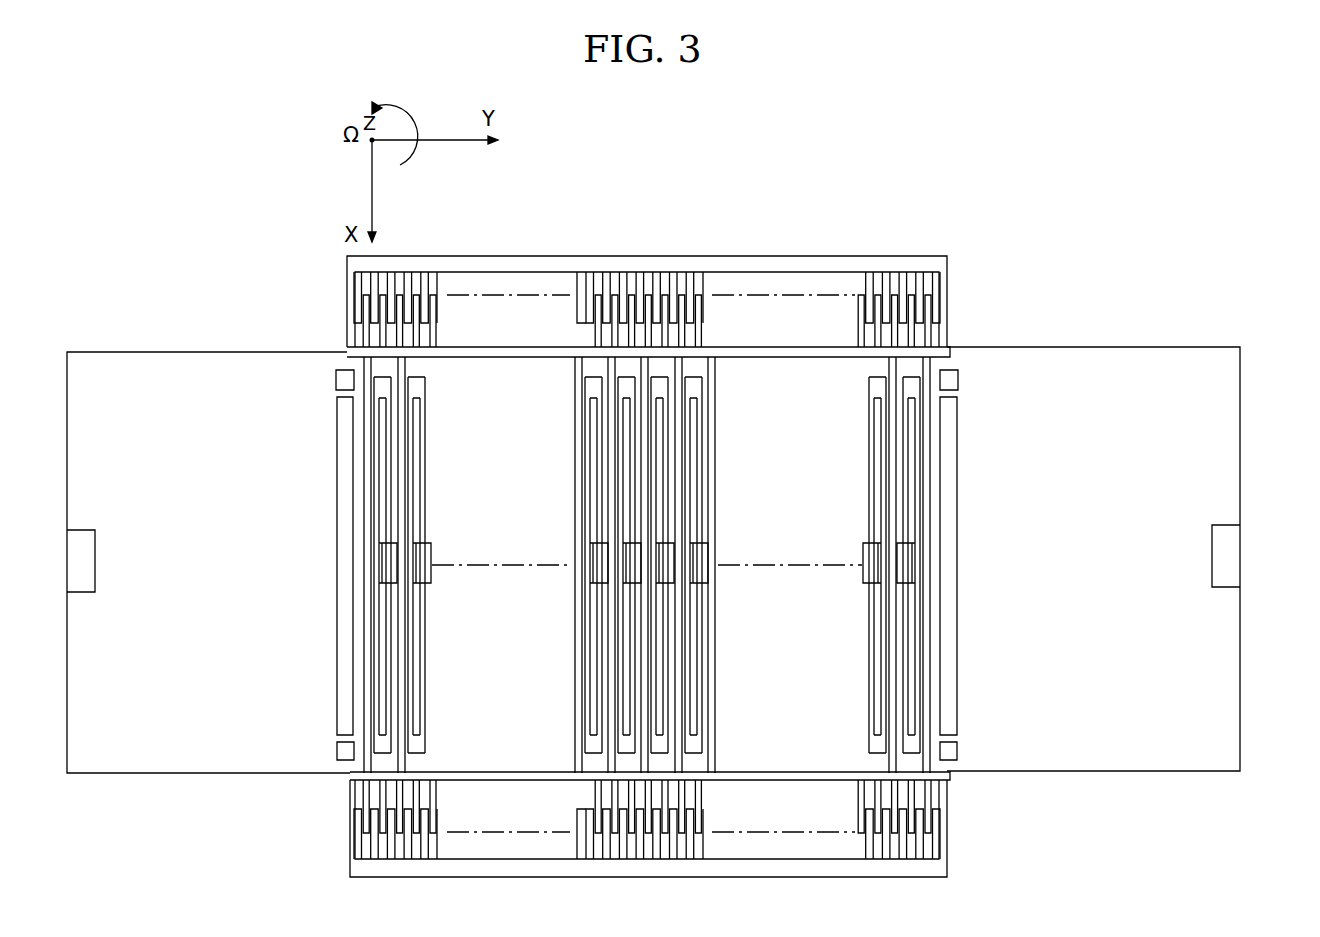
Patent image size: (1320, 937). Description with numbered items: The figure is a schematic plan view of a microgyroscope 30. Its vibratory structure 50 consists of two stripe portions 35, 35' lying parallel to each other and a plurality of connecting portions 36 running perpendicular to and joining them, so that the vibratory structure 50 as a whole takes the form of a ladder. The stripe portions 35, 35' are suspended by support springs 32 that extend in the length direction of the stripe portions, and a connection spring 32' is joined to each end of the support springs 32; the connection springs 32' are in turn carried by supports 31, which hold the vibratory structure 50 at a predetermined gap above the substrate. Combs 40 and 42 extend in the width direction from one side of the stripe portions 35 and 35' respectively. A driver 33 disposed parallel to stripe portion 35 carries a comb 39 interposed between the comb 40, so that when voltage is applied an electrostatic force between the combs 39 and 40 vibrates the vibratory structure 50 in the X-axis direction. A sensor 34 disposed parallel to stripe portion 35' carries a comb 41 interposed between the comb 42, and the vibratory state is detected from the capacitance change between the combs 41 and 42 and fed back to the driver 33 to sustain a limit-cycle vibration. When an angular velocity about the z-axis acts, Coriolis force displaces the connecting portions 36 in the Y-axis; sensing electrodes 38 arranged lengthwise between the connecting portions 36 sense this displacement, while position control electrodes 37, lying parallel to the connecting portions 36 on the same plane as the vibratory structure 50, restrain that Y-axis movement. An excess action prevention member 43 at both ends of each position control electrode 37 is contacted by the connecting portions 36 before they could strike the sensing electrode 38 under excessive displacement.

The microgyroscope 30 is at (1108, 252).
The support 31 is at (97, 561).
The support spring 32 is at (714, 521).
The connection spring 32' is at (208, 562).
The driver 33 is at (345, 260).
The sensor 34 is at (690, 877).
The stripe portion 35 is at (433, 551).
The stripe portion 35' is at (453, 574).
The connecting portion 36 is at (405, 366).
The position control electrode 37 is at (345, 521).
The sensing electrode 38 is at (920, 489).
The comb 39 is at (948, 300).
The comb 40 is at (948, 341).
The comb 41 is at (950, 867).
The comb 42 is at (950, 785).
The excess action prevention member 43 is at (960, 379).
The vibratory structure 50 is at (460, 561).